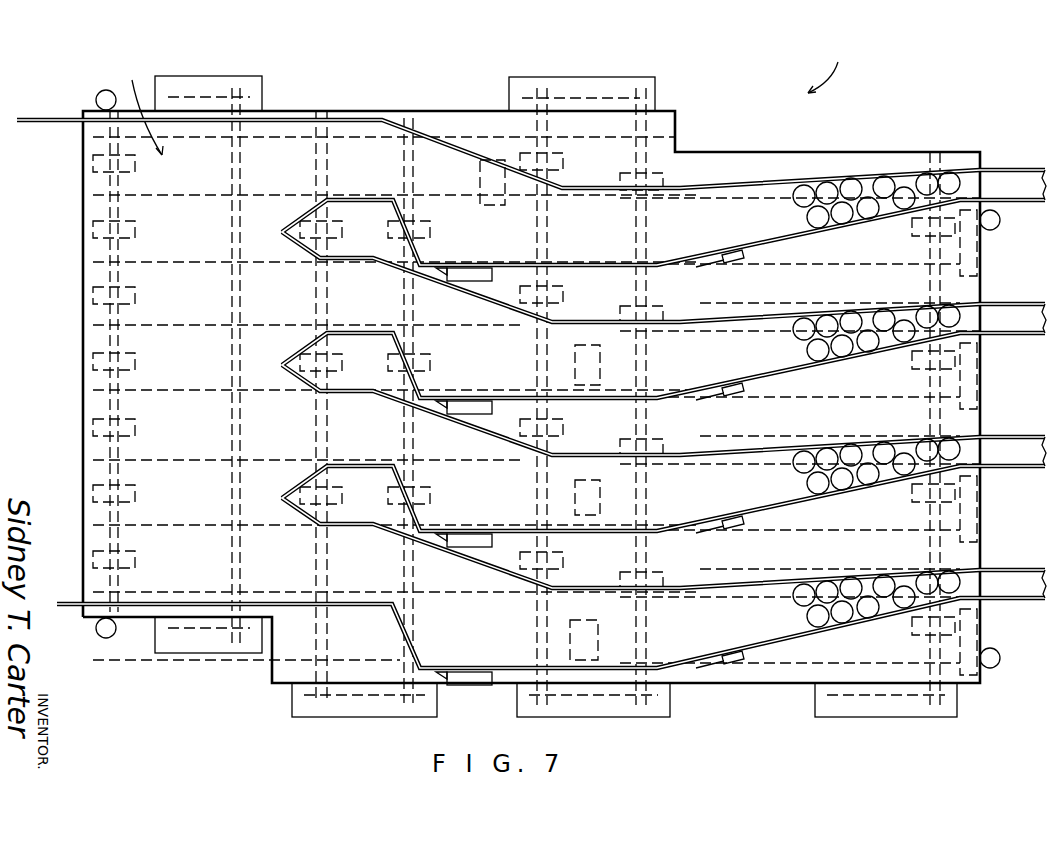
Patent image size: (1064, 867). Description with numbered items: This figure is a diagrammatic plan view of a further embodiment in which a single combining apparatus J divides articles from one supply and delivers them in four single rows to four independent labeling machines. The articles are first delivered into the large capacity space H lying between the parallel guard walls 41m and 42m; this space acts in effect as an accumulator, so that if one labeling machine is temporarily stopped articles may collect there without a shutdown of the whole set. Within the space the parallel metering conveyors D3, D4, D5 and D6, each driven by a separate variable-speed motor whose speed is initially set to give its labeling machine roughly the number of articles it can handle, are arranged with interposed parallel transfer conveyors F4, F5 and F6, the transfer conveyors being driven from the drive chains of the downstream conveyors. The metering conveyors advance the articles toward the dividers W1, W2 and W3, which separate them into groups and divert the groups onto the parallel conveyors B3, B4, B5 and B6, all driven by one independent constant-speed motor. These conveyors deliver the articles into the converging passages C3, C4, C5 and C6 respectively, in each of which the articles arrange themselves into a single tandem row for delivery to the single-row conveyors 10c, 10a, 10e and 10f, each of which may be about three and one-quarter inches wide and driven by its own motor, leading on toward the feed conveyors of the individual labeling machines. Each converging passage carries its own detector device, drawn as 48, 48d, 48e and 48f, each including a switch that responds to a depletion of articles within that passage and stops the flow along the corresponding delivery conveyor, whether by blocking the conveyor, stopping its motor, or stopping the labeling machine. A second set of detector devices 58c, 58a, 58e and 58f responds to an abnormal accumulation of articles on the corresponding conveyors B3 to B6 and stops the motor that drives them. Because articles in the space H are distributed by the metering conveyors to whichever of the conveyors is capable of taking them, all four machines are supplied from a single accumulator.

The large capacity space H is at (136, 104).
The combining apparatus J is at (823, 66).
The guard wall 41m is at (300, 117).
The guard wall 42m is at (286, 612).
The divider W1 is at (283, 232).
The divider W2 is at (282, 365).
The divider W3 is at (282, 498).
The conveyor B3 is at (466, 212).
The conveyor B4 is at (588, 348).
The conveyor B5 is at (588, 484).
The conveyor B6 is at (580, 625).
The converging passage C3 is at (732, 208).
The converging passage C4 is at (777, 350).
The converging passage C5 is at (777, 483).
The converging passage C6 is at (777, 605).
The single-row conveyor 10c is at (1017, 183).
The delivery tube 10a is at (1017, 316).
The single-row conveyor 10e is at (1018, 447).
The single-row conveyor 10f is at (1018, 577).
The metering conveyor D3 is at (135, 183).
The metering conveyor D4 is at (138, 277).
The metering conveyor D5 is at (140, 410).
The metering conveyor D6 is at (138, 577).
The transfer conveyor F4 is at (137, 251).
The transfer conveyor F5 is at (137, 345).
The transfer conveyor F6 is at (135, 476).
The bracket 48 is at (703, 272).
The detector device 48d is at (694, 401).
The detector device 48e is at (693, 534).
The detector device 48f is at (705, 680).
The detector device 58c is at (482, 274).
The plate 58a is at (482, 407).
The detector device 58e is at (468, 543).
The detector device 58f is at (470, 682).